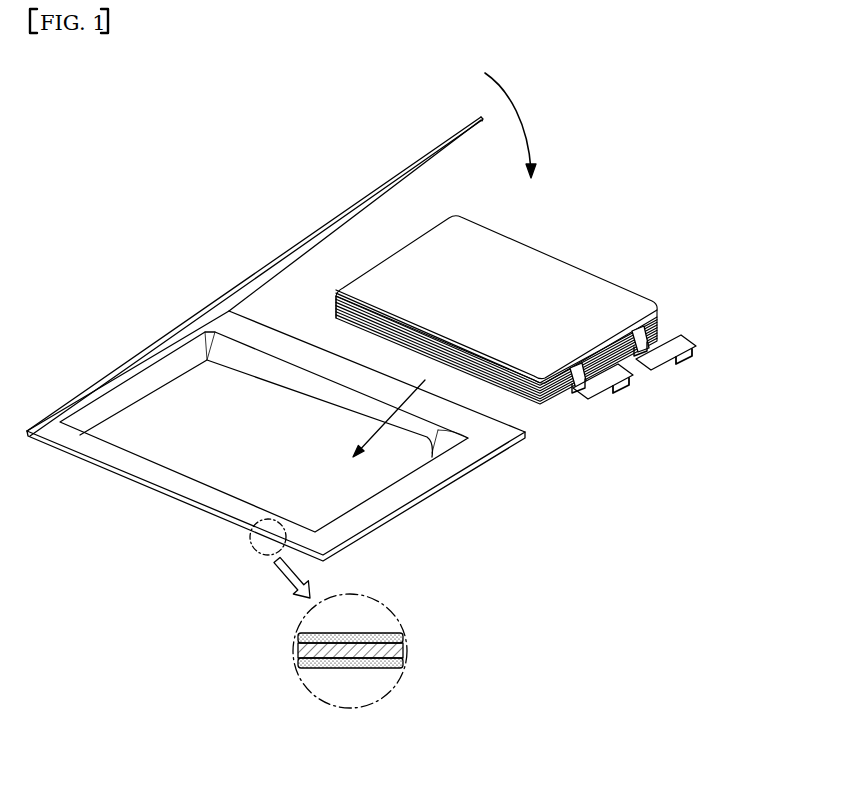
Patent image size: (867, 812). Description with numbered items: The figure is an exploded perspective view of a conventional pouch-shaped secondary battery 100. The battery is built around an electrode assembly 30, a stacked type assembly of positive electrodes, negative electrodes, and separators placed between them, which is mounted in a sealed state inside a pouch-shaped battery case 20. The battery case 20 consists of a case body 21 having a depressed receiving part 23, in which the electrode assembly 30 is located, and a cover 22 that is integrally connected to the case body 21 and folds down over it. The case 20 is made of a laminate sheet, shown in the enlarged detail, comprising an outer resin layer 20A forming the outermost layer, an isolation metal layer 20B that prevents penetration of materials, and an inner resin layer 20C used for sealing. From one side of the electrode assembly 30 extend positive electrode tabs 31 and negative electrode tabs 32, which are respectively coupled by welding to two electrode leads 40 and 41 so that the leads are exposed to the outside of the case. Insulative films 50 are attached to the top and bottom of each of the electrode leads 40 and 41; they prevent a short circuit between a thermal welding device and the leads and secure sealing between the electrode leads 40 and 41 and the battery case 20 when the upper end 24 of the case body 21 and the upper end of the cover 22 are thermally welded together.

The battery pack 100 is at (71, 117).
The pouch-shaped battery case 20 is at (114, 309).
The case body 21 is at (200, 505).
The cover 22 is at (303, 222).
The depressed receiving part 23 is at (155, 448).
The upper end of the case body 24 is at (402, 497).
The outer resin layer 20A is at (388, 665).
The isolation metal layer 20B is at (397, 651).
The inner resin layer 20C is at (397, 628).
The electrode assembly 30 is at (567, 280).
The positive electrode tabs 31 is at (657, 323).
The negative electrode tabs 32 is at (574, 388).
The electrode lead 40 is at (688, 355).
The electrode lead 41 is at (628, 400).
The insulative films 50 is at (632, 394).